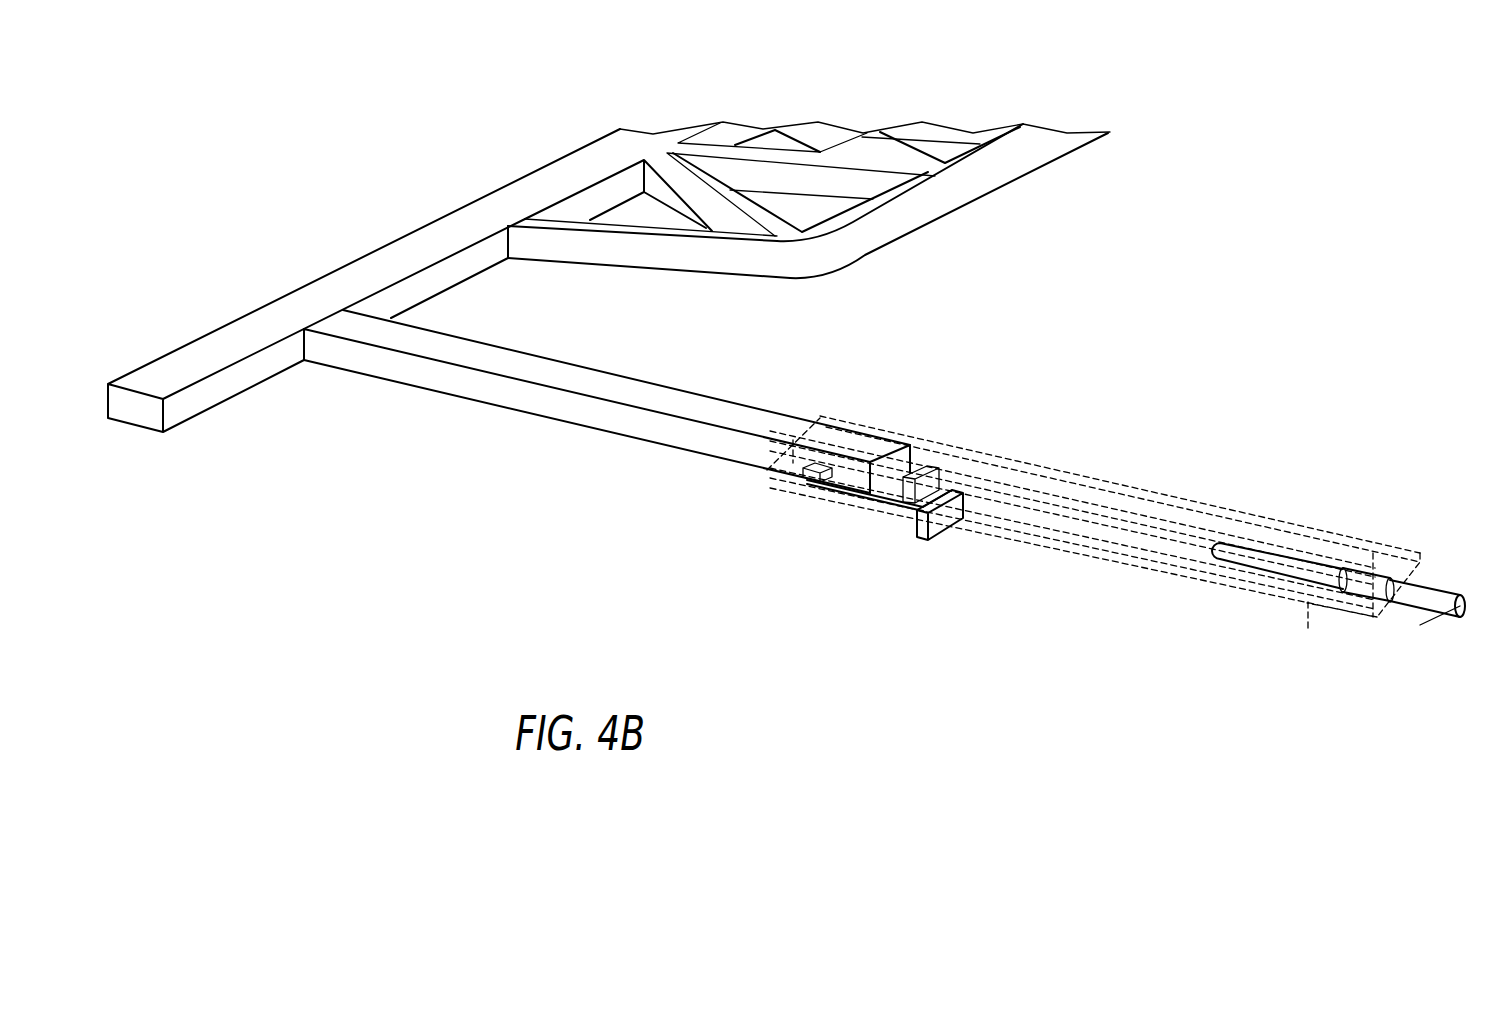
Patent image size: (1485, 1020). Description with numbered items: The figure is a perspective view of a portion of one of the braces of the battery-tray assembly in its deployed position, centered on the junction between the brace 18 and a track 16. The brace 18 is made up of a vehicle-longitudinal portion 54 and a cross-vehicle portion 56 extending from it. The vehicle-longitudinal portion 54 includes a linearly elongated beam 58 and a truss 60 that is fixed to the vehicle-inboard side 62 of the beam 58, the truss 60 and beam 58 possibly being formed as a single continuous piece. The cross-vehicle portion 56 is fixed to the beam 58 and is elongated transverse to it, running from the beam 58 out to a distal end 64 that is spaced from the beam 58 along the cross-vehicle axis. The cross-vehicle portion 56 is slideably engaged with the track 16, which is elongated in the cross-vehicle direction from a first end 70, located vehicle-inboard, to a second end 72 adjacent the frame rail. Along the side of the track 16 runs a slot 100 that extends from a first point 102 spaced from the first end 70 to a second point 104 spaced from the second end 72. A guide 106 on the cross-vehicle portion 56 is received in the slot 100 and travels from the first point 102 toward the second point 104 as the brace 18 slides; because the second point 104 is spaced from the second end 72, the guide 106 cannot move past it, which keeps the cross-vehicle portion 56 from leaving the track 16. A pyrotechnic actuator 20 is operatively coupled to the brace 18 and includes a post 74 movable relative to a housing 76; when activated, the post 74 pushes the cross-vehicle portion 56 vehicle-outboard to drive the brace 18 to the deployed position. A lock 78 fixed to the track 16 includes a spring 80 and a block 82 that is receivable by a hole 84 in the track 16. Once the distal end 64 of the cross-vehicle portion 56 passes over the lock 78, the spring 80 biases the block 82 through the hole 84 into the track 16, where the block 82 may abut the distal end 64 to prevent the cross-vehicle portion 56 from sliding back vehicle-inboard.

The track 16 is at (1288, 580).
The first brace 18 is at (609, 310).
The pyrotechnic actuator 20 is at (1420, 620).
The vehicle-longitudinal portion 54 is at (364, 276).
The cross-vehicle portion 56 is at (610, 405).
The beam 58 is at (364, 276).
The truss 60 is at (933, 200).
The vehicle-inboard side 62 is at (422, 285).
The distal end 64 is at (917, 445).
The first end 70 is at (1410, 580).
The second end 72 is at (767, 470).
The post 74 is at (1262, 550).
The housing 76 is at (1373, 580).
The lock 78 is at (1052, 478).
The spring 80 is at (853, 497).
The block 82 is at (927, 464).
The hole 84 is at (900, 508).
The slot 100 is at (1153, 523).
The first point 102 is at (1308, 602).
The second point 104 is at (794, 440).
The guide 106 is at (808, 476).